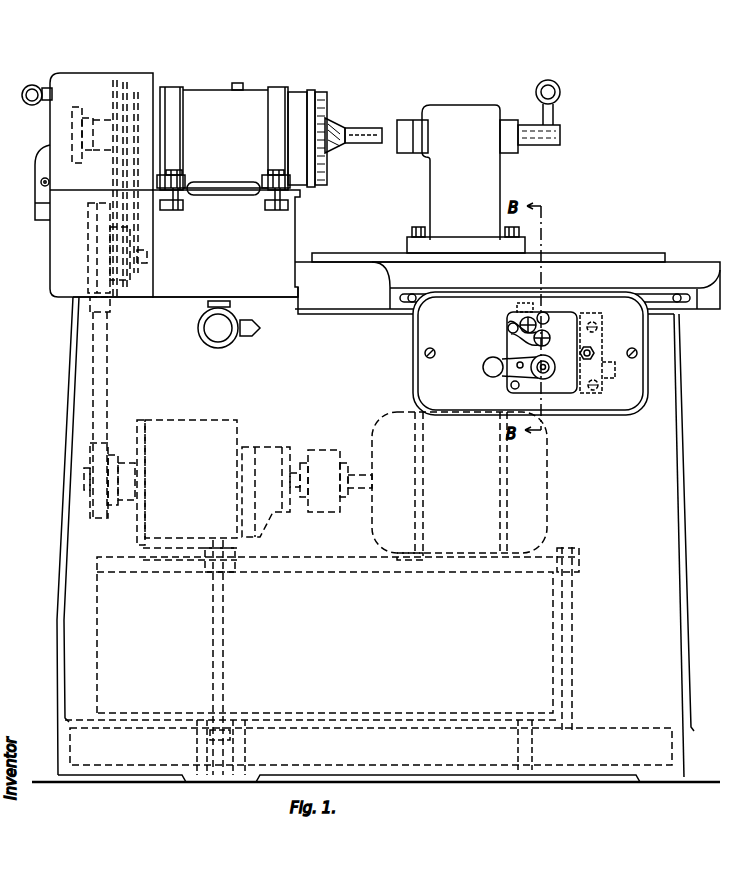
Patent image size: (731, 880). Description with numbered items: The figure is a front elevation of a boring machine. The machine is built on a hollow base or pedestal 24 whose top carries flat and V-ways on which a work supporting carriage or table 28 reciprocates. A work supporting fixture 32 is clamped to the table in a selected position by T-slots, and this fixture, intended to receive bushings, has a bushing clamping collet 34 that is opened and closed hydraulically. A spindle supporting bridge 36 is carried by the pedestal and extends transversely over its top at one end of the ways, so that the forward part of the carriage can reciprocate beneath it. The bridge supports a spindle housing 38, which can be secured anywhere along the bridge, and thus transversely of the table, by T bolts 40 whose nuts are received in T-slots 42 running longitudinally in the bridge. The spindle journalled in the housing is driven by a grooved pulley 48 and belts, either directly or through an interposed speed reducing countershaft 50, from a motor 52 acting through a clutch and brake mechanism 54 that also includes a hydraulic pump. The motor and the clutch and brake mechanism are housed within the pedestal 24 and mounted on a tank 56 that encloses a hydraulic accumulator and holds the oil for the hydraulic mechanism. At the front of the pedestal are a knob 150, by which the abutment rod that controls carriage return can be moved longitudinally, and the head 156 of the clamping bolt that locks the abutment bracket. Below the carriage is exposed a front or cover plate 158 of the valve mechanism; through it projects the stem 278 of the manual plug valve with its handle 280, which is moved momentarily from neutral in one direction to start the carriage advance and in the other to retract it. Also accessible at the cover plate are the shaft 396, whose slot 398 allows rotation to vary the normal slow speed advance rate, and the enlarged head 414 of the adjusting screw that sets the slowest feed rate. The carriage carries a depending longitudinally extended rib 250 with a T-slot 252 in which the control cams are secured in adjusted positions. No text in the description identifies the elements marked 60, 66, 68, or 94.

The hollow base or pedestal 24 is at (60, 548).
The work supporting carriage or table 28 is at (678, 266).
The work supporting fixture 32 is at (490, 188).
The bushing clamping collet 34 is at (407, 150).
The spindle supporting bridge 36 is at (268, 244).
The spindle housing 38 is at (228, 100).
The T bolts 40 is at (183, 174).
The T-slots 42 is at (175, 211).
The grooved pulley 48 is at (112, 96).
The speed reducing countershaft 50 is at (86, 253).
The motor 52 is at (397, 412).
The clutch and brake mechanism 54 is at (206, 423).
The tank 56 is at (545, 628).
The eye bolt 60 is at (243, 87).
The coupling 66 is at (337, 143).
The spindle 68 is at (373, 127).
The pulley 94 is at (84, 478).
The knob 150 is at (205, 342).
The head 156 is at (258, 338).
The front or cover plate 158 is at (566, 392).
The depending longitudinally extended rib 250 is at (698, 306).
The T-slot 252 is at (653, 294).
The stem 278 is at (547, 362).
The handle 280 is at (490, 378).
The shaft 396 is at (550, 331).
The slot 398 is at (584, 341).
The enlarged head 414 is at (534, 338).